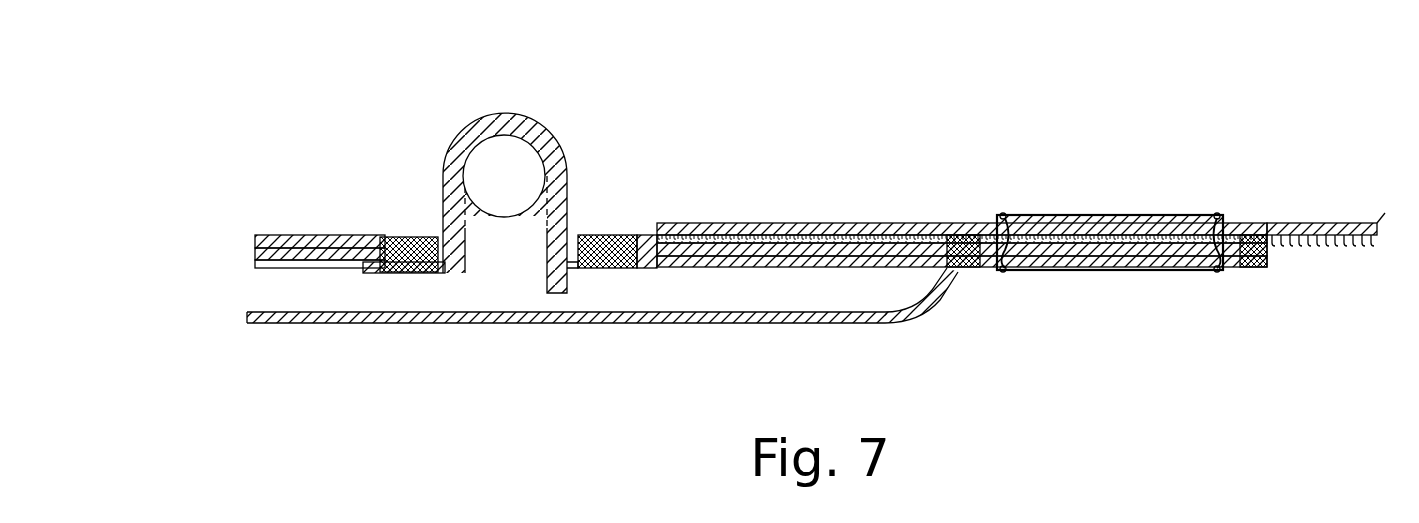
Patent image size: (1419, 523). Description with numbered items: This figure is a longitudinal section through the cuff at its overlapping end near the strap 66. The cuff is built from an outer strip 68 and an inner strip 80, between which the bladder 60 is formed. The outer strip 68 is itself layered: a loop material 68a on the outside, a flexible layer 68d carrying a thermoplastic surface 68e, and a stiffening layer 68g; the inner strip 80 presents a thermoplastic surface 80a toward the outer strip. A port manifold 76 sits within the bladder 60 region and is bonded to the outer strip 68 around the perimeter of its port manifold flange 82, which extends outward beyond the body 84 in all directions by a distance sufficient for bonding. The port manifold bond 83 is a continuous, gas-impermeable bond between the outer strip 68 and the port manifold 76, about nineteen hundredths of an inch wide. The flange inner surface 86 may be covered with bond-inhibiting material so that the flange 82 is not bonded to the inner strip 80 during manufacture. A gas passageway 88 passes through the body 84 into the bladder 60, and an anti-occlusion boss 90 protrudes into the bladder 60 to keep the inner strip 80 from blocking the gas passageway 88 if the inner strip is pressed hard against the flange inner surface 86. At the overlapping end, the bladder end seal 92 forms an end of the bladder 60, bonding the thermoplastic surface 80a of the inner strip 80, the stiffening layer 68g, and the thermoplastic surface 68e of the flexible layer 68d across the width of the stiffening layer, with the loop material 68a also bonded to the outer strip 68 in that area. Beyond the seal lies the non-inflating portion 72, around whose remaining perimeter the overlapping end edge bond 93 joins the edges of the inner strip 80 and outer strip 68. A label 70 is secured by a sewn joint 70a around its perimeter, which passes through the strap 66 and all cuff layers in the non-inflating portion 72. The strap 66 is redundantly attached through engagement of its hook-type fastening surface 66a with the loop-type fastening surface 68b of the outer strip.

The bladder 60 is at (828, 290).
The strap 66 is at (1326, 239).
The hook-type fastening surface 66a is at (1300, 242).
The outer strip 68 is at (226, 216).
The loop material 68a is at (255, 240).
The loop-type fastening surface 68b is at (962, 290).
The flexible layer 68d is at (255, 253).
The thermoplastic surface 68e is at (765, 268).
The stiffening layer 68g is at (263, 265).
The label 70 is at (1148, 181).
The sewn joint 70a is at (1008, 217).
The non-inflating portion 72 is at (1236, 298).
The port manifold 76 is at (529, 196).
The inner strip 80 is at (300, 323).
The thermoplastic surface 80a is at (270, 305).
The port manifold flange 82 is at (353, 272).
The port manifold bond 83 is at (437, 230).
The body 84 is at (448, 92).
The flange inner surface 86 is at (438, 282).
The gas passageway 88 is at (495, 168).
The anti-occlusion boss 90 is at (552, 293).
The bladder end seal 92 is at (948, 298).
The overlapping end edge bond 93 is at (1268, 298).